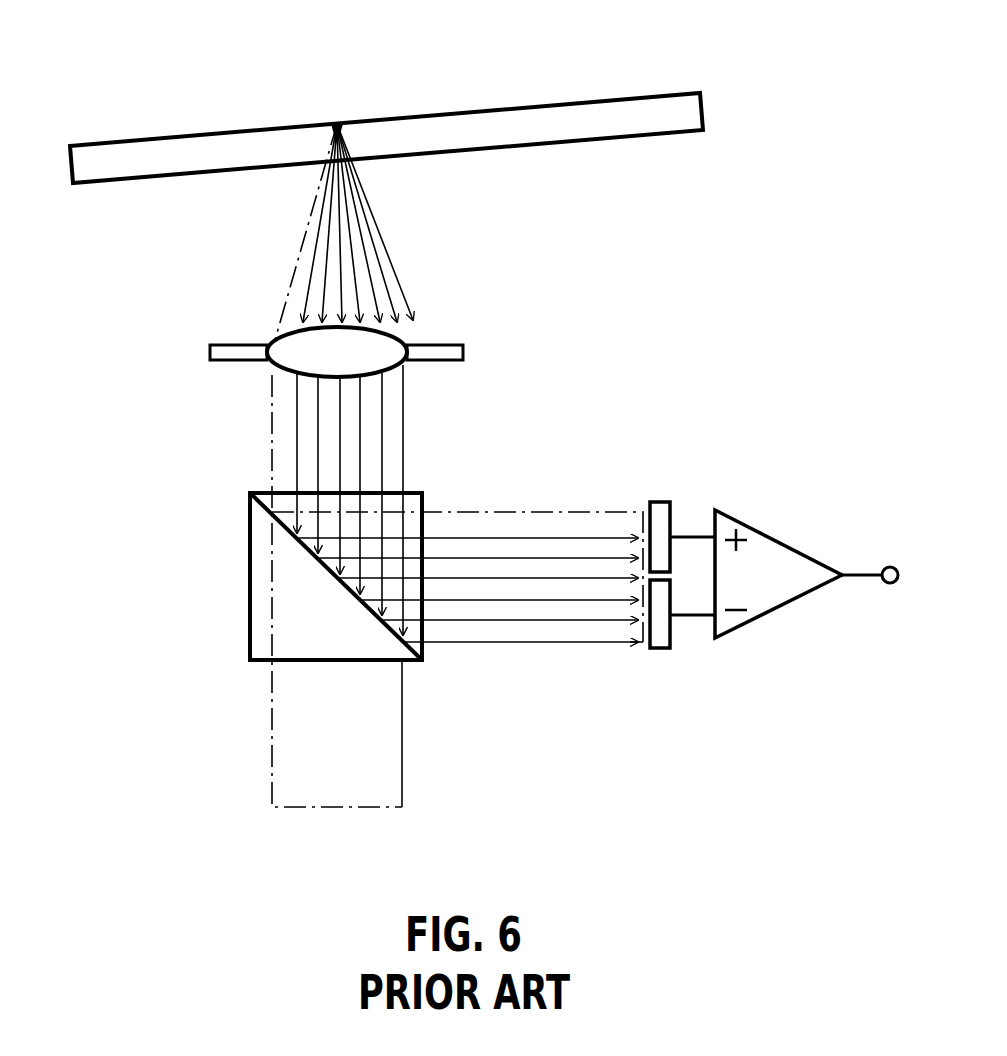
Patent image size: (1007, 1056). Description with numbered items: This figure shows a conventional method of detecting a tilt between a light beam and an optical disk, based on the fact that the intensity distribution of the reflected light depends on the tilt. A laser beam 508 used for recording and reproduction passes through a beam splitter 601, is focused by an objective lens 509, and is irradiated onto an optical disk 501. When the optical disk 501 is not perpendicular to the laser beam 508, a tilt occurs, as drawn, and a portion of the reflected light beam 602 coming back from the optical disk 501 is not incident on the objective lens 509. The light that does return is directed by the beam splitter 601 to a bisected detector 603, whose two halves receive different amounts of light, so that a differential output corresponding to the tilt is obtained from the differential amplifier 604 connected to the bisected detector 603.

The optical disk 501 is at (482, 128).
The reflected light beam 602 is at (379, 231).
The objective lens 509 is at (297, 348).
The laser beam 508 is at (360, 742).
The beam splitter 601 is at (250, 582).
The bisected detector 603 is at (653, 502).
The differential amplifier 604 is at (782, 563).